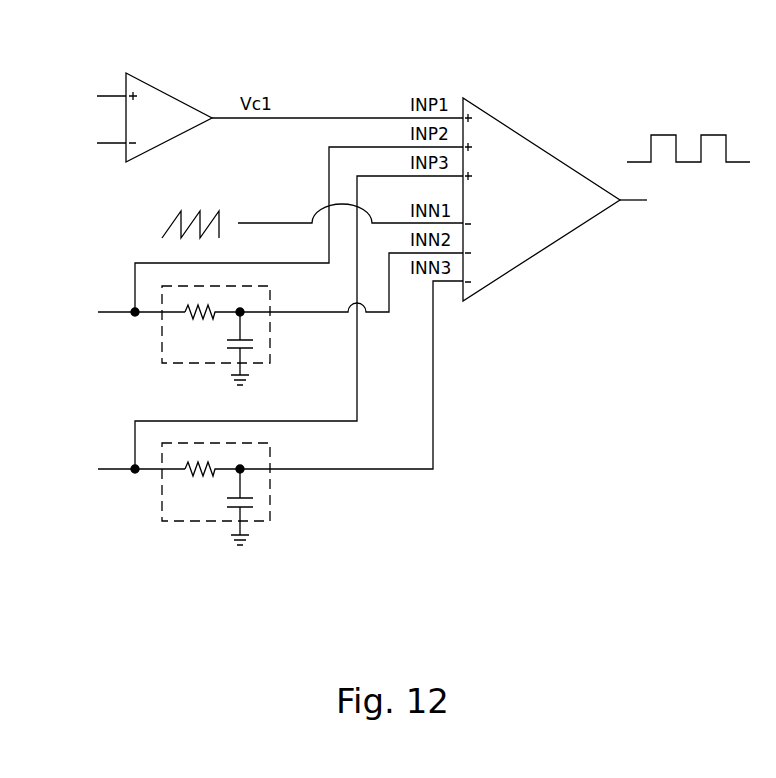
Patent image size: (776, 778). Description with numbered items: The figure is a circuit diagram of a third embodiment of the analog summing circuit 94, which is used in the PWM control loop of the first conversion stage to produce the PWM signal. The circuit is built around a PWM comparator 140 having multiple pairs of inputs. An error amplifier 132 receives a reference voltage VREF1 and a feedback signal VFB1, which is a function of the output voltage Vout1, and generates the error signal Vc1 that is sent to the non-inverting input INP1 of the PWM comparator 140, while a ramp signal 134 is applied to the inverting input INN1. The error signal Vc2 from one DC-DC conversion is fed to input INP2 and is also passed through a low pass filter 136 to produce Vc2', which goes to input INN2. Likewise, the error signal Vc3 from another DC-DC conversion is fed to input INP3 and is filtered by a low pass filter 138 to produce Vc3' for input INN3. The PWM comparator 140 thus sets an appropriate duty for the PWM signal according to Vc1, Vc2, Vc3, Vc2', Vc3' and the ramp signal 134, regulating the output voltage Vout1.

The error amplifier 132 is at (170, 92).
The ramp signal 134 is at (165, 224).
The low pass filter 136 is at (160, 333).
The low pass filter 138 is at (160, 490).
The PWM comparator 140 is at (540, 147).
The analog summing circuit 94 is at (708, 60).